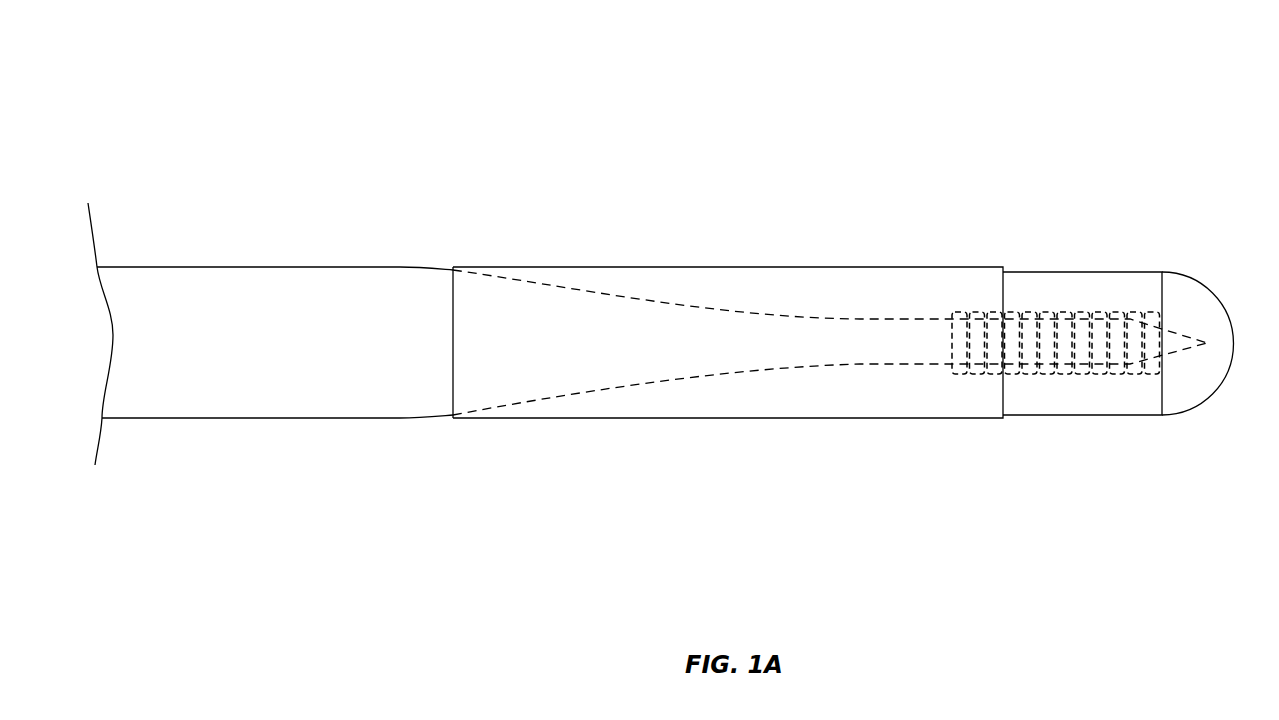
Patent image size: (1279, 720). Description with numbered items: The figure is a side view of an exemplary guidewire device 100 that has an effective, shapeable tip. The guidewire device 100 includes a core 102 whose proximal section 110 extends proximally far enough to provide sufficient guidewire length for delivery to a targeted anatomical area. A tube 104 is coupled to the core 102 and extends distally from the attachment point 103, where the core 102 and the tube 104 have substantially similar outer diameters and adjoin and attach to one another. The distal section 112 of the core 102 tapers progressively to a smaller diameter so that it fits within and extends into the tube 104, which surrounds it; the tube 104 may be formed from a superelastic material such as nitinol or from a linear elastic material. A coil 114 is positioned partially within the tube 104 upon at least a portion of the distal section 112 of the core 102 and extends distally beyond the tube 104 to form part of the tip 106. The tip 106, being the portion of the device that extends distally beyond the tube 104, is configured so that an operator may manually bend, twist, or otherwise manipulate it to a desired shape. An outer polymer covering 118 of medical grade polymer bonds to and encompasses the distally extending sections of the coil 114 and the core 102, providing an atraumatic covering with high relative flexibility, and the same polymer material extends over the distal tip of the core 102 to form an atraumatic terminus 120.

The guidewire device 100 is at (198, 98).
The core 102 is at (327, 262).
The attachment point 103 is at (448, 268).
The tube 104 is at (786, 267).
The tip 106 is at (1204, 453).
The proximal section 110 is at (195, 390).
The distal section 112 is at (863, 345).
The coil 114 is at (982, 307).
The polymer covering 118 is at (1135, 287).
The atraumatic terminus 120 is at (1195, 297).